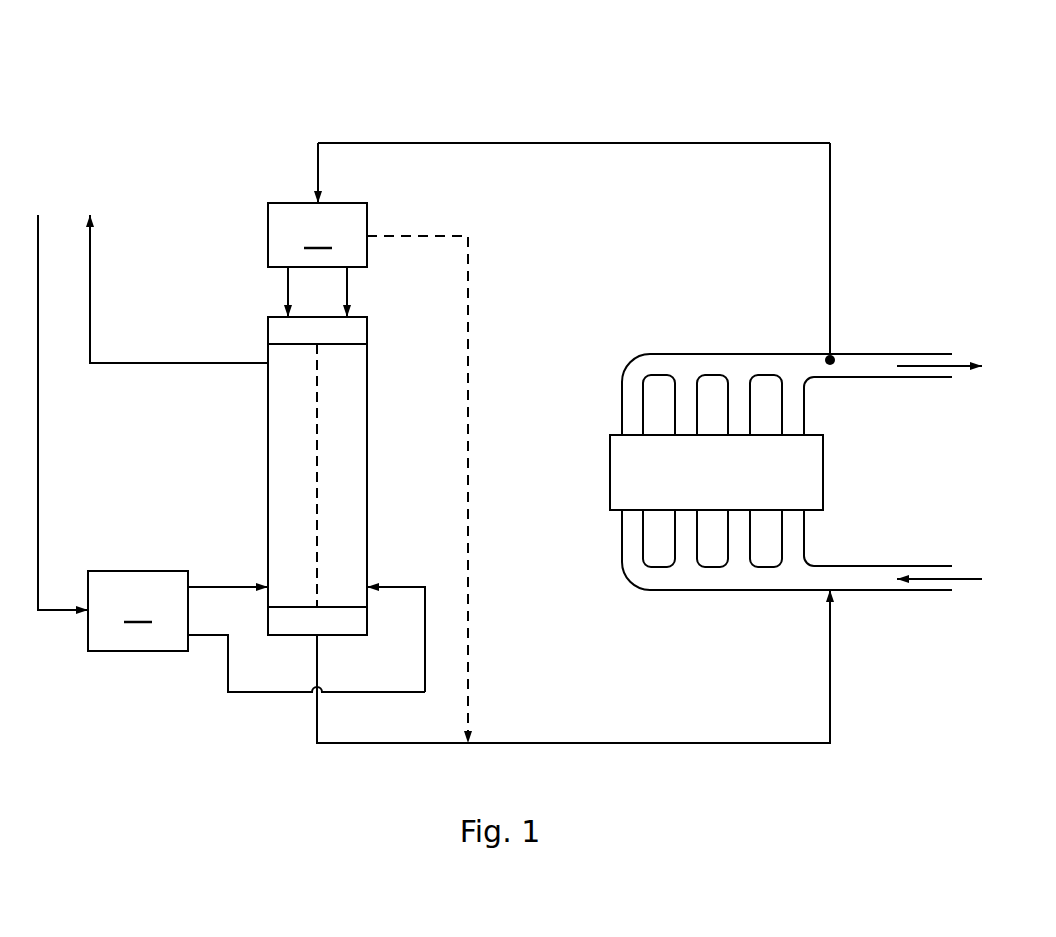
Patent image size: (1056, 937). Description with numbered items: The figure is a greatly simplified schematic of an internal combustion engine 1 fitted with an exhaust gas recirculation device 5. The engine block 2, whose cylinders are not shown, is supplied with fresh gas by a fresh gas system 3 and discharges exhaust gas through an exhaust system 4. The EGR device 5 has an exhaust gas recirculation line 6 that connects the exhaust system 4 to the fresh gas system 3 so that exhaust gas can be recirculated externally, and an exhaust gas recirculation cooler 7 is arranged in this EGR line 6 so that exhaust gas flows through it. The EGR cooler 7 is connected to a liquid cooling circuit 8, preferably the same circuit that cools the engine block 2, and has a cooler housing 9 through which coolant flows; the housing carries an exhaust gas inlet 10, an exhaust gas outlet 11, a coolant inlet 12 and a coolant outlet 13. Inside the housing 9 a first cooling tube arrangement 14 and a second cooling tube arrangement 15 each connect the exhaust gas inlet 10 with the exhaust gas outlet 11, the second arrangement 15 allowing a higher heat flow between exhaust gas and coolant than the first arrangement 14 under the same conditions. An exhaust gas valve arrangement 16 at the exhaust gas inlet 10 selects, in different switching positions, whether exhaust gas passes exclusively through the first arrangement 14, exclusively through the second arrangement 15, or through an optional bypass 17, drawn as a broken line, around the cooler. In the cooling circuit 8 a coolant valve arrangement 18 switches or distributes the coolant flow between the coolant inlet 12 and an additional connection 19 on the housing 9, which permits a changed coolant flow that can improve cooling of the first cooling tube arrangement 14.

The internal combustion engine 1 is at (920, 233).
The engine block 2 is at (823, 475).
The fresh gas system 3 is at (942, 590).
The exhaust system 4 is at (942, 354).
The exhaust gas recirculation device 5 is at (572, 120).
The exhaust gas recirculation line 6 is at (640, 143).
The exhaust gas recirculation cooler 7 is at (268, 478).
The cooling circuit 8 is at (147, 366).
The cooler housing 9 is at (268, 448).
The exhaust gas inlet 10 is at (318, 317).
The exhaust gas outlet 11 is at (313, 637).
The coolant inlet 12 is at (265, 590).
The coolant outlet 13 is at (268, 362).
The first cooling tube arrangement 14 is at (340, 475).
The second cooling tube arrangement 15 is at (297, 437).
The exhaust gas valve arrangement 16 is at (317, 235).
The bypass 17 is at (468, 455).
The coolant valve arrangement 18 is at (138, 611).
The additional connection 19 is at (367, 585).